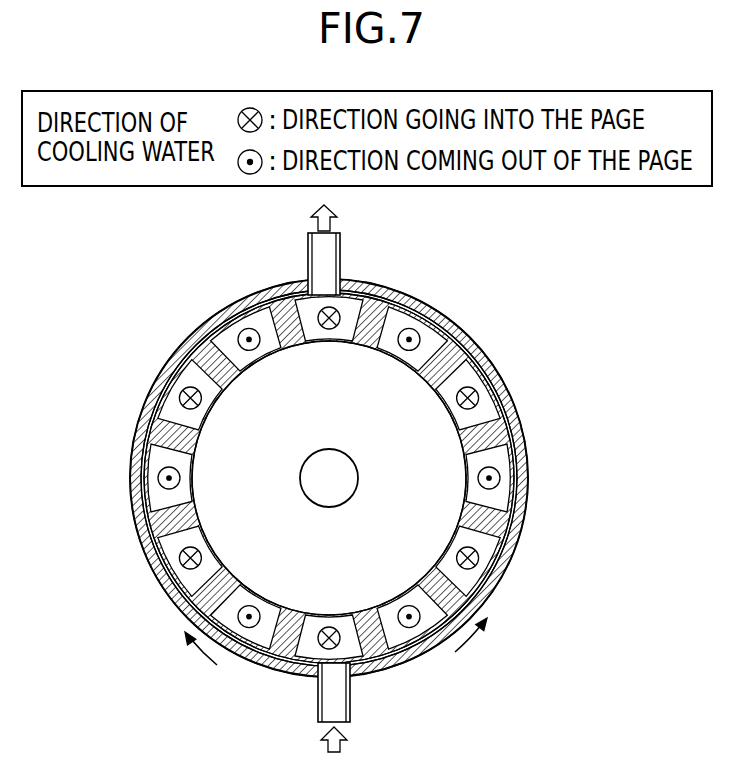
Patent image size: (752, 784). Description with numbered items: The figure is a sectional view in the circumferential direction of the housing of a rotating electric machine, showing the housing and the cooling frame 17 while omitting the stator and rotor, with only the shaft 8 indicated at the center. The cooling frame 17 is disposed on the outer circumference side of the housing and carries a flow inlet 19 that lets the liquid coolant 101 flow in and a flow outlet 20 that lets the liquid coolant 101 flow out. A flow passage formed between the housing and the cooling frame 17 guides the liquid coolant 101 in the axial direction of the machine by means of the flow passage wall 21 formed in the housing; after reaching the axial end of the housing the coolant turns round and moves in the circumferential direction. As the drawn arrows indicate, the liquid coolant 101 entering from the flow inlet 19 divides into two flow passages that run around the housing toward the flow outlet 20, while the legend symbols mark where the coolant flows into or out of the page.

The shaft 8 is at (313, 462).
The cooling frame 17 is at (468, 335).
The flow inlet 19 is at (335, 692).
The flow outlet 20 is at (327, 260).
The flow passage wall 21 is at (518, 505).
The liquid coolant 101 is at (377, 677).